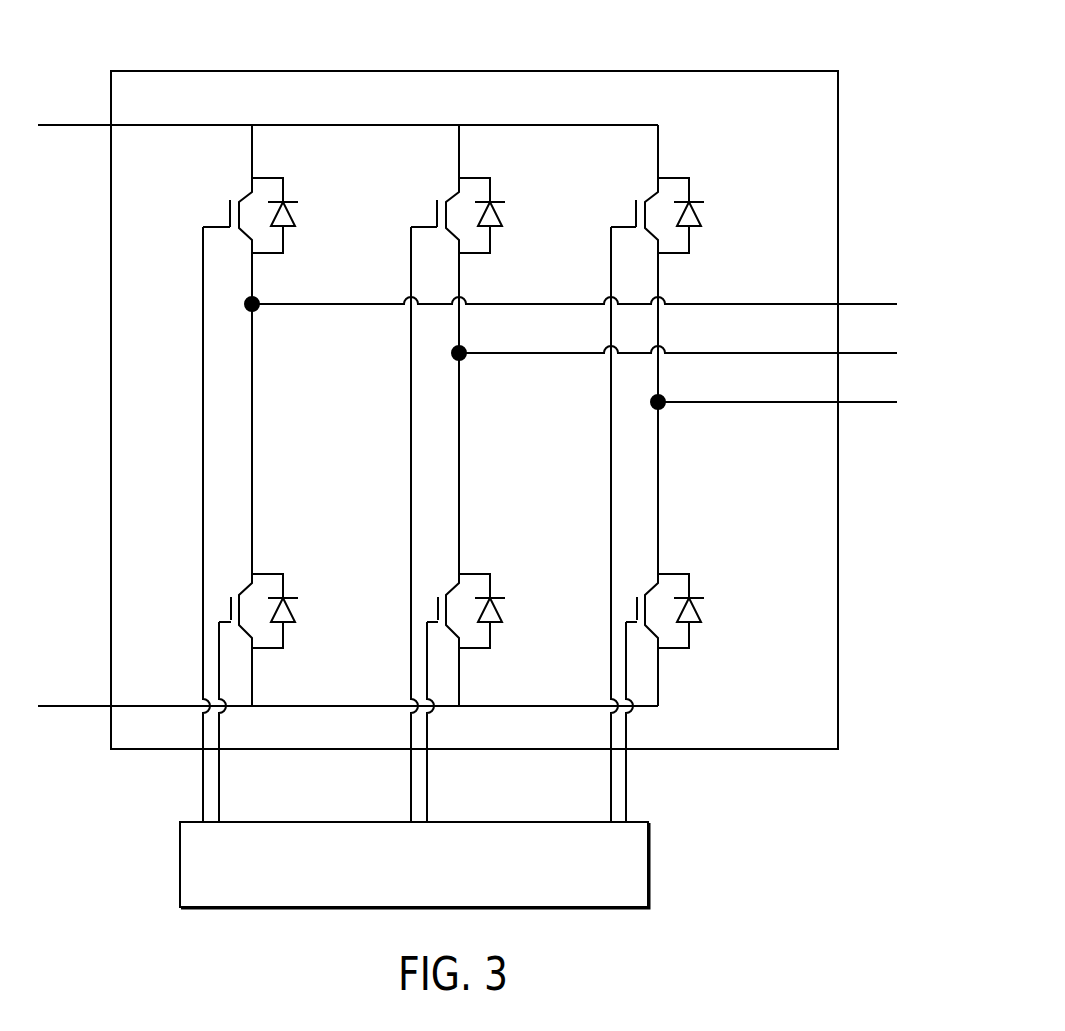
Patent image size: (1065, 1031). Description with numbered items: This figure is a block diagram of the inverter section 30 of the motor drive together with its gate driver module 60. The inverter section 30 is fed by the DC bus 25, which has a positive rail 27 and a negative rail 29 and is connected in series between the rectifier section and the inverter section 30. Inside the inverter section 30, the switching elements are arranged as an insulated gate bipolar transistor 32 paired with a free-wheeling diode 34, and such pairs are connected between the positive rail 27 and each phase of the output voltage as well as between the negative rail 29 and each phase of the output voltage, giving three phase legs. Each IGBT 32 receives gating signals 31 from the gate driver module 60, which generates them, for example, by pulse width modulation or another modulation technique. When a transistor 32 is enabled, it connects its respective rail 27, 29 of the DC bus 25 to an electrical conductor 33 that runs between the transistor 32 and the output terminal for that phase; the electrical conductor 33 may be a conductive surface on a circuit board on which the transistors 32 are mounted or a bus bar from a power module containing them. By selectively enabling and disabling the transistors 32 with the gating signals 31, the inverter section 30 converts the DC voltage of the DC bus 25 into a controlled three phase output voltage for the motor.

The DC bus 25 is at (90, 129).
The positive rail 27 is at (82, 124).
The negative rail 29 is at (80, 705).
The inverter section 30 is at (472, 71).
The gating signals 31 is at (219, 784).
The insulated gate bipolar transistor 32 is at (214, 207).
The electrical conductor 33 is at (887, 400).
The free-wheeling diode 34 is at (298, 222).
The gate driver module 60 is at (650, 862).